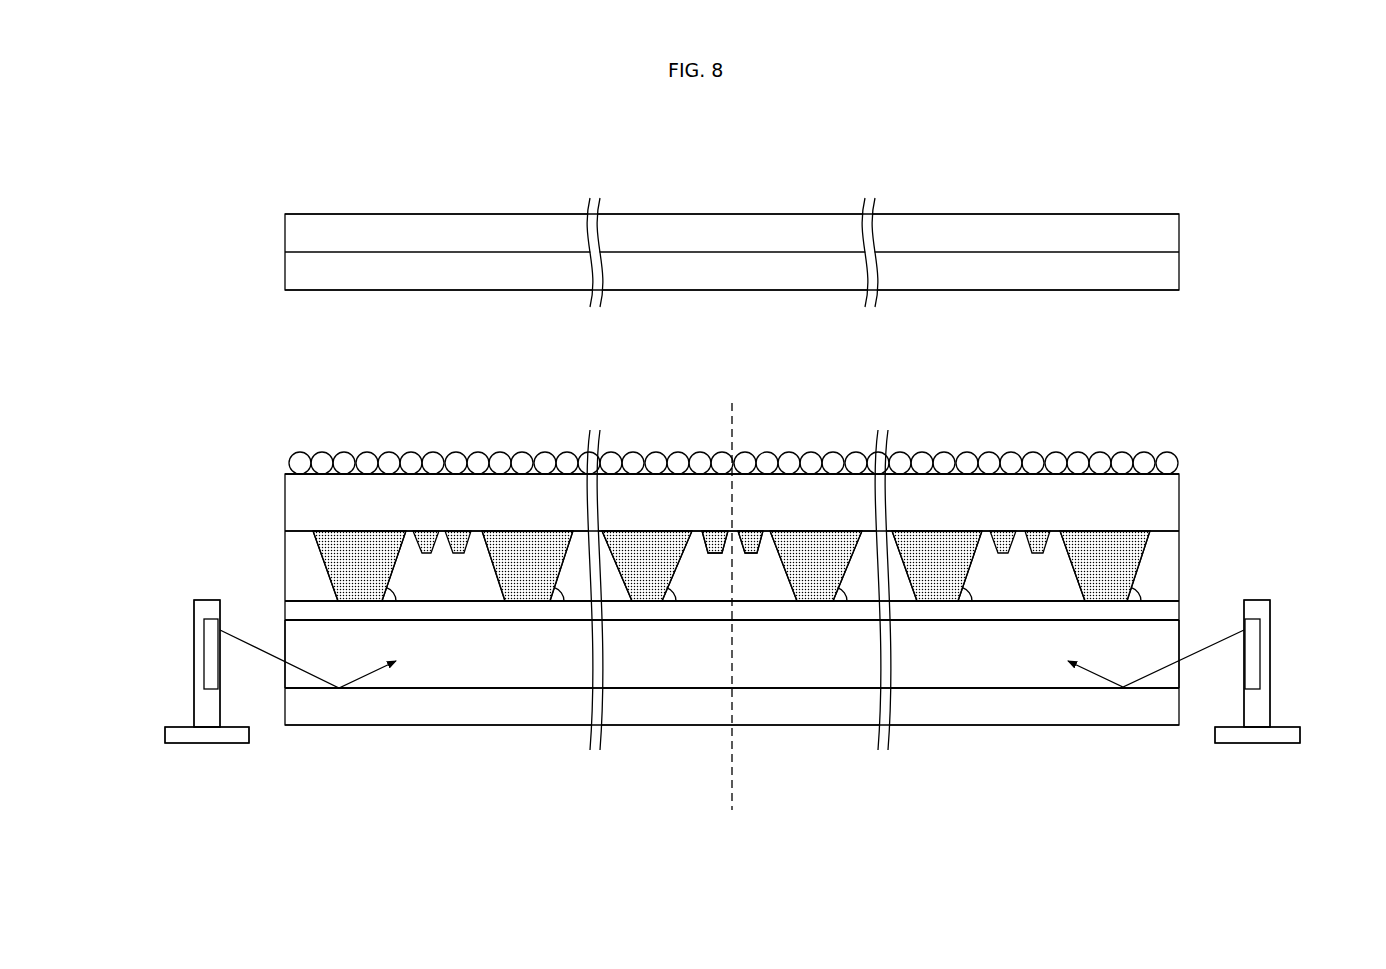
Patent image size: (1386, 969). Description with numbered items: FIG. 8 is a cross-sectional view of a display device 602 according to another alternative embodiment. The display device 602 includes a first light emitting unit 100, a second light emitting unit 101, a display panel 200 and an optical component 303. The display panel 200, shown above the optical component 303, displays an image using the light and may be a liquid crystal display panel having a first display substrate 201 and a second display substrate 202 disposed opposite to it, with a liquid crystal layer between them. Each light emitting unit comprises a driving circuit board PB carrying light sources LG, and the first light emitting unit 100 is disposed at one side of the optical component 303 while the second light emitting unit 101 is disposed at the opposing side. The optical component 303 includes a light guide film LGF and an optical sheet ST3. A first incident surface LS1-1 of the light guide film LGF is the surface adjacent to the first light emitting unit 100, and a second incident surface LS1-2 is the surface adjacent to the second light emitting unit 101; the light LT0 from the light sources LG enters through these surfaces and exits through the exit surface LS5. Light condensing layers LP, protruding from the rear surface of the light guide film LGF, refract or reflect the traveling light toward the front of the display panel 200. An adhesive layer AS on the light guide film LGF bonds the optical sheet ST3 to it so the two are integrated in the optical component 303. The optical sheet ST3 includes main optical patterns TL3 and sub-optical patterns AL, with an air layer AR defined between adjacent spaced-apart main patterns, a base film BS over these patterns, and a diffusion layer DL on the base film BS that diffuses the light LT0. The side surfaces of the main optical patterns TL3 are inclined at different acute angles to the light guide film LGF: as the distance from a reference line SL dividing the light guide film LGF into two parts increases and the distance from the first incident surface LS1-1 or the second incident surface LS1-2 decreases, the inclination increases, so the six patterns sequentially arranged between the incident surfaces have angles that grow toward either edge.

The display device 602 is at (1188, 156).
The display panel 200 is at (1262, 222).
The second display substrate 202 is at (1167, 232).
The first display substrate 201 is at (1167, 272).
The optical component 303 is at (1166, 381).
The main optical patterns TL3 is at (350, 368).
The diffusion layer DL is at (1178, 462).
The base film BS is at (1170, 503).
The optical sheet ST3 is at (1250, 455).
The reference line SL is at (731, 619).
The exit surface LS5 is at (477, 608).
The light guide film LGF is at (978, 668).
The light condensing layers LP is at (935, 712).
The adhesive layer AS is at (1018, 612).
The first incident surface LS1-1 is at (285, 673).
The second incident surface LS1-2 is at (1179, 670).
The air layer AR is at (716, 587).
The sub-optical patterns AL is at (748, 552).
The light LT0 is at (375, 672).
The light sources LG is at (194, 675).
The driving circuit board PB is at (203, 735).
The first light emitting unit 100 is at (217, 812).
The second light emitting unit 101 is at (1340, 812).